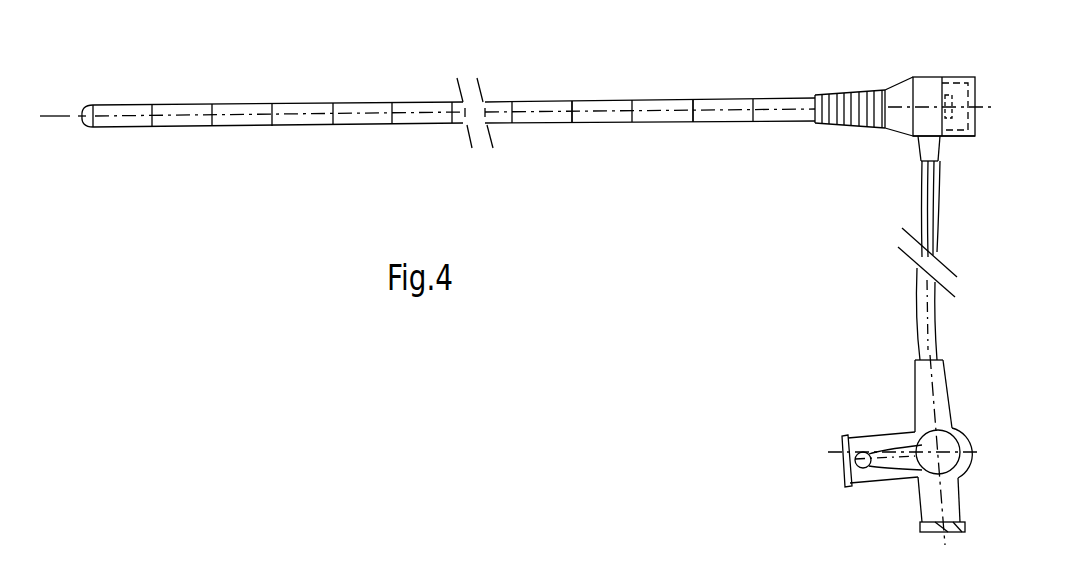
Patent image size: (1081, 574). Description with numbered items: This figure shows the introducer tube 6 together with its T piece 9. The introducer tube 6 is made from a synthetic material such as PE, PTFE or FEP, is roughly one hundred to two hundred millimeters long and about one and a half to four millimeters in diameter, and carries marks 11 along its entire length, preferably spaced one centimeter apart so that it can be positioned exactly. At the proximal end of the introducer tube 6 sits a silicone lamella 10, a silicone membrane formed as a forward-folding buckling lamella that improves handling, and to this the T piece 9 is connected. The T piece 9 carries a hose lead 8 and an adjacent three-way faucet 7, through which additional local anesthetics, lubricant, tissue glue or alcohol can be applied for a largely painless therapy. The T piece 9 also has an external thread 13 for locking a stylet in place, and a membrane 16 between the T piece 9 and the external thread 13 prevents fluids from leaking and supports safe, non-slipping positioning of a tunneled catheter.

The introducer tube 6 is at (660, 115).
The three-way faucet 7 is at (942, 420).
The hose lead 8 is at (935, 210).
The T piece 9 is at (932, 85).
The silicone lamella 10 is at (845, 125).
The marks 11 is at (692, 100).
The external thread 13 is at (975, 135).
The membrane 16 is at (952, 98).